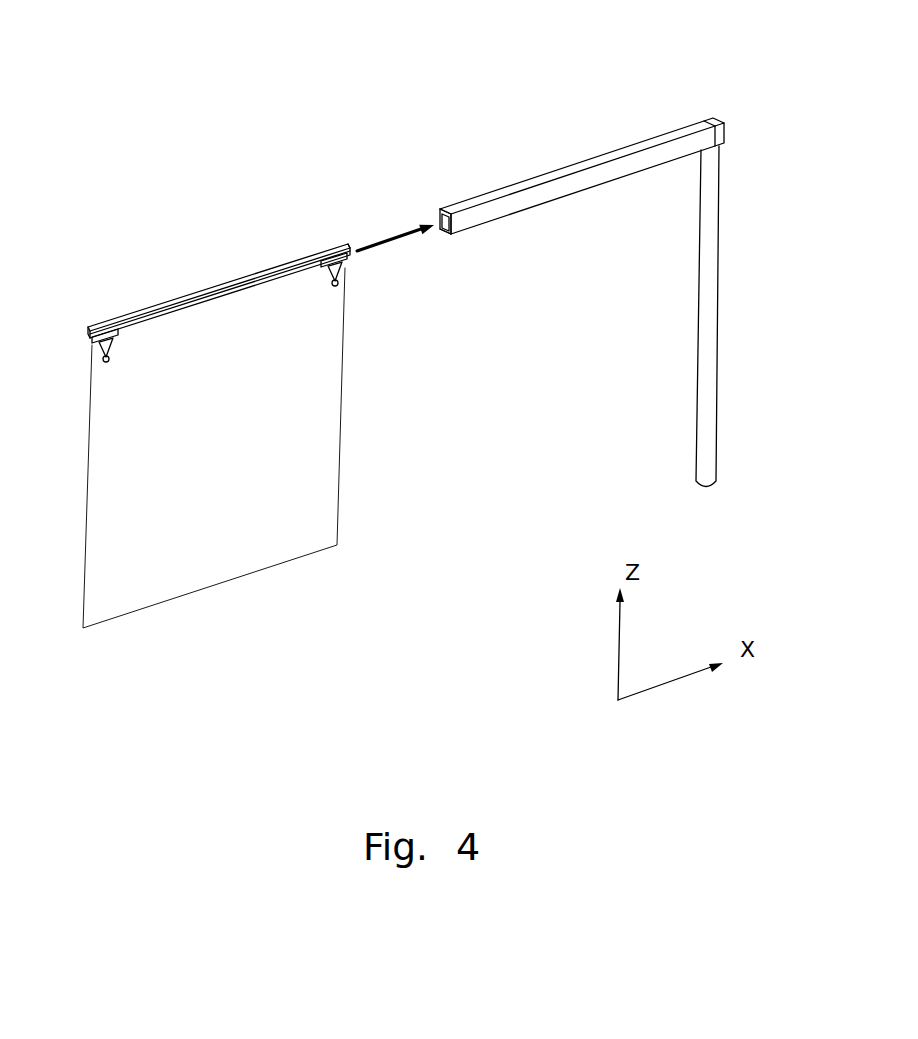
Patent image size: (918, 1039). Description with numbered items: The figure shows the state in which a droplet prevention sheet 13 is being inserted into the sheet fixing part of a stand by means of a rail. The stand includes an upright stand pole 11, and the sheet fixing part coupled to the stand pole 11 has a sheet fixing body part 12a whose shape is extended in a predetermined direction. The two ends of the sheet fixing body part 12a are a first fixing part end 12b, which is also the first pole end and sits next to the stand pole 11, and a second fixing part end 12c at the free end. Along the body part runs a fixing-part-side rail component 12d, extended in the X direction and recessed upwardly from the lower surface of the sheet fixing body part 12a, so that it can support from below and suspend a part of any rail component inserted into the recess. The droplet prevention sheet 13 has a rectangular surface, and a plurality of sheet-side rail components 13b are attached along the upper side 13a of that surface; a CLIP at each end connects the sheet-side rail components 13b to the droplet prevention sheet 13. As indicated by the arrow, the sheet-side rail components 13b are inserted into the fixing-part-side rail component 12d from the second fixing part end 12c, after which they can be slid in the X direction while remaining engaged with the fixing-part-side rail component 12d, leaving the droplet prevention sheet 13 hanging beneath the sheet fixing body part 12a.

The stand pole 11 is at (707, 347).
The sheet fixing body part 12a is at (592, 168).
The first fixing part end 12b is at (704, 126).
The second fixing part end 12c is at (452, 209).
The fixing-part-side rail component 12d is at (447, 234).
The droplet prevention sheet 13 is at (317, 482).
The upper side 13a is at (277, 268).
The sheet-side rail component 13b is at (218, 287).
The clip CLIP is at (97, 328).